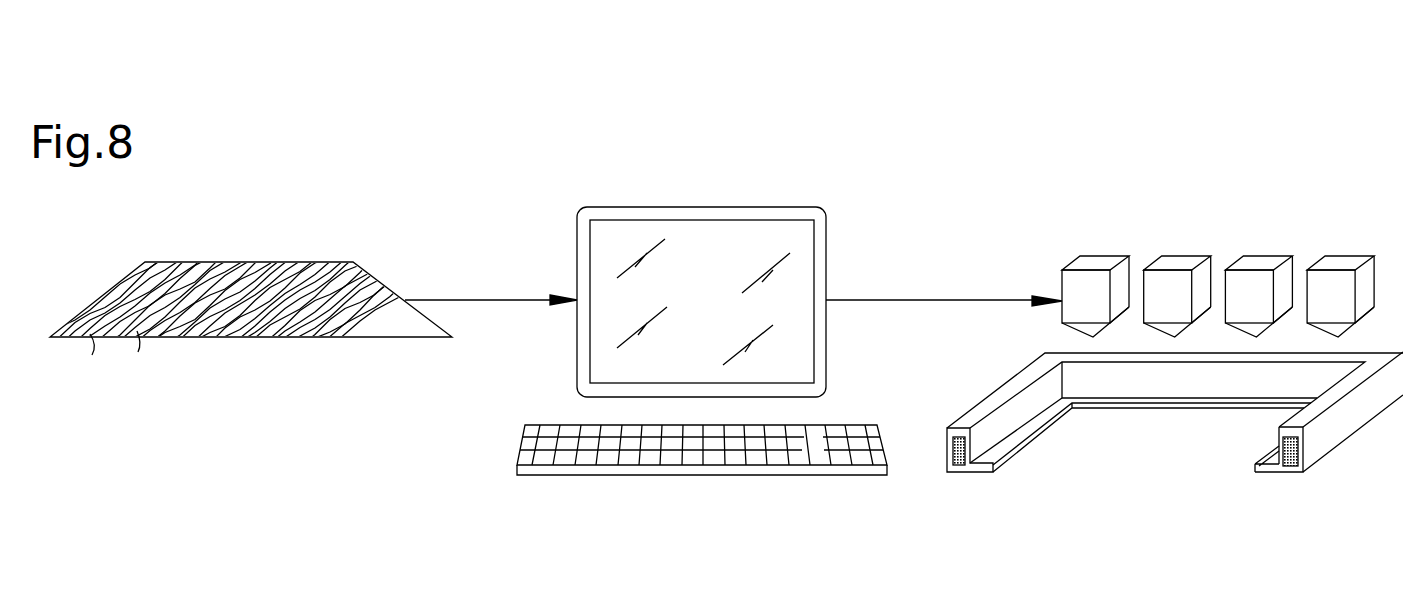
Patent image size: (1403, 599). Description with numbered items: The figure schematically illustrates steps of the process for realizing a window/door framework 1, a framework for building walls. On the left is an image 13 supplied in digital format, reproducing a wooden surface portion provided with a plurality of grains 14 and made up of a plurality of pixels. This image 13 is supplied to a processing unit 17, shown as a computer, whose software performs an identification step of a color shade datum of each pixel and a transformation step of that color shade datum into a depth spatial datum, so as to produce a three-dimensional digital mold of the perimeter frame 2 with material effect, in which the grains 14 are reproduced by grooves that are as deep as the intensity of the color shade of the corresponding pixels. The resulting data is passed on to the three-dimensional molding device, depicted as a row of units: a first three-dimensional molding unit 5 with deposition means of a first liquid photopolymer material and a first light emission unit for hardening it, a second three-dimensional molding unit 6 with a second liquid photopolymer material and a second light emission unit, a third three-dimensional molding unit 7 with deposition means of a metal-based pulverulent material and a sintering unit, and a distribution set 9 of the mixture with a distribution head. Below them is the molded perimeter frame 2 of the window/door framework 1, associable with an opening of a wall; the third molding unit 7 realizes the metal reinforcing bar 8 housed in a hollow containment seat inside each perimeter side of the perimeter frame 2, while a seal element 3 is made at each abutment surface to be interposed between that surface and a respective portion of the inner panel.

The window/door framework 1 is at (1166, 470).
The perimeter frame 2 is at (1345, 410).
The seal element 3 is at (1023, 450).
The first three-dimensional molding unit 5 is at (1103, 256).
The second three-dimensional molding unit 6 is at (1180, 263).
The third three-dimensional molding unit 7 is at (1253, 263).
The metal reinforcing bar 8 is at (957, 452).
The distribution set 9 is at (1330, 260).
The image 13 is at (256, 218).
The grains 14 is at (137, 330).
The processing unit 17 is at (740, 170).